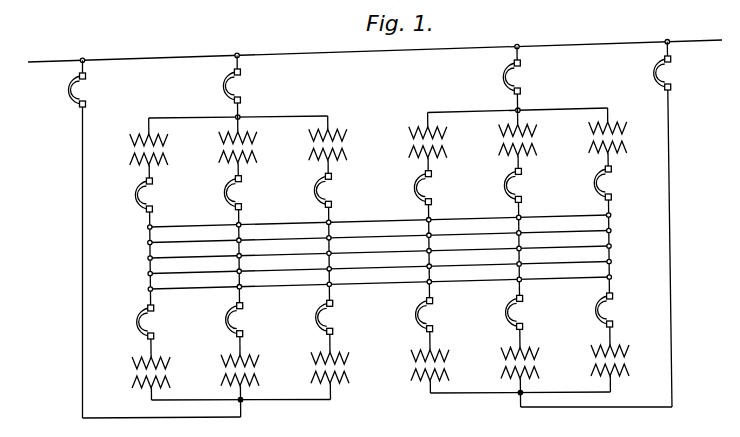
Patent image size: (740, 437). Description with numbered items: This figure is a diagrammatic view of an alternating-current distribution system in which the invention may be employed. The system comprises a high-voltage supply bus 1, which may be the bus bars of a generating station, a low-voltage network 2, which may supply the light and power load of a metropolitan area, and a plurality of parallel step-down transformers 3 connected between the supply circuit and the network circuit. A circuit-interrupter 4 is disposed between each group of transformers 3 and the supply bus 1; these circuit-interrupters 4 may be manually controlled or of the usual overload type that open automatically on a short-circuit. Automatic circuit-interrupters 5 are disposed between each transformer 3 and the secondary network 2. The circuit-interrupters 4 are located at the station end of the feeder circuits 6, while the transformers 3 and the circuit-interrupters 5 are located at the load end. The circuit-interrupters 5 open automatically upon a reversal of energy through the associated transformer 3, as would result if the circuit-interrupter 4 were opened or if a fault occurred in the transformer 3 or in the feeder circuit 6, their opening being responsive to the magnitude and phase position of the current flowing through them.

The high-voltage supply bus 1 is at (163, 57).
The low-voltage network 2 is at (149, 253).
The step-down transformers 3 is at (145, 133).
The circuit-interrupter 4 is at (69, 91).
The automatic circuit-interrupters 5 is at (135, 195).
The feeder circuits 6 is at (81, 151).